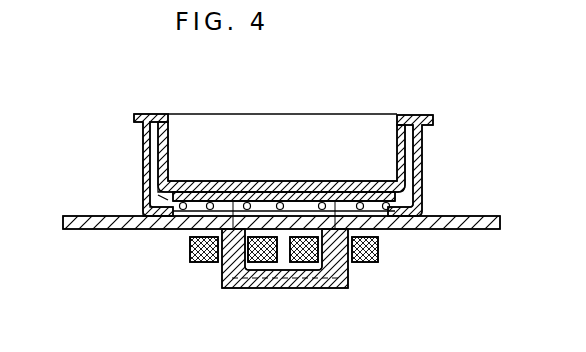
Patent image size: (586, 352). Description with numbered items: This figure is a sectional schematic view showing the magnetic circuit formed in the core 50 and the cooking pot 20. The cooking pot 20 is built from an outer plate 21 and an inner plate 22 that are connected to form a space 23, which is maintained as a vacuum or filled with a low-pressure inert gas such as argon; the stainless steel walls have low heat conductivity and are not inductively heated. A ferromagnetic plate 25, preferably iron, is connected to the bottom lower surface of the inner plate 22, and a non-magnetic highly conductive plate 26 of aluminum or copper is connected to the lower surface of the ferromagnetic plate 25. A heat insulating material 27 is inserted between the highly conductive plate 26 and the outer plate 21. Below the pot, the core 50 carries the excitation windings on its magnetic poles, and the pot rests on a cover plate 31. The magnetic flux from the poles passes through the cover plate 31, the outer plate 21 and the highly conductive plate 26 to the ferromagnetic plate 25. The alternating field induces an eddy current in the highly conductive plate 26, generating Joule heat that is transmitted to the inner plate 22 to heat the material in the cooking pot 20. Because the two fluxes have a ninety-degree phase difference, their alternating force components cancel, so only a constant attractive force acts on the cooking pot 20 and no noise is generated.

The cooking pot 20 is at (273, 98).
The outer plate 21 is at (143, 160).
The inner plate 22 is at (168, 145).
The space 23 is at (158, 198).
The ferromagnetic plate 25 is at (330, 190).
The non-magnetic highly conductive plate 26 is at (357, 200).
The heat insulating material 27 is at (386, 203).
The cover plate 31 is at (80, 217).
The core 50 is at (260, 288).